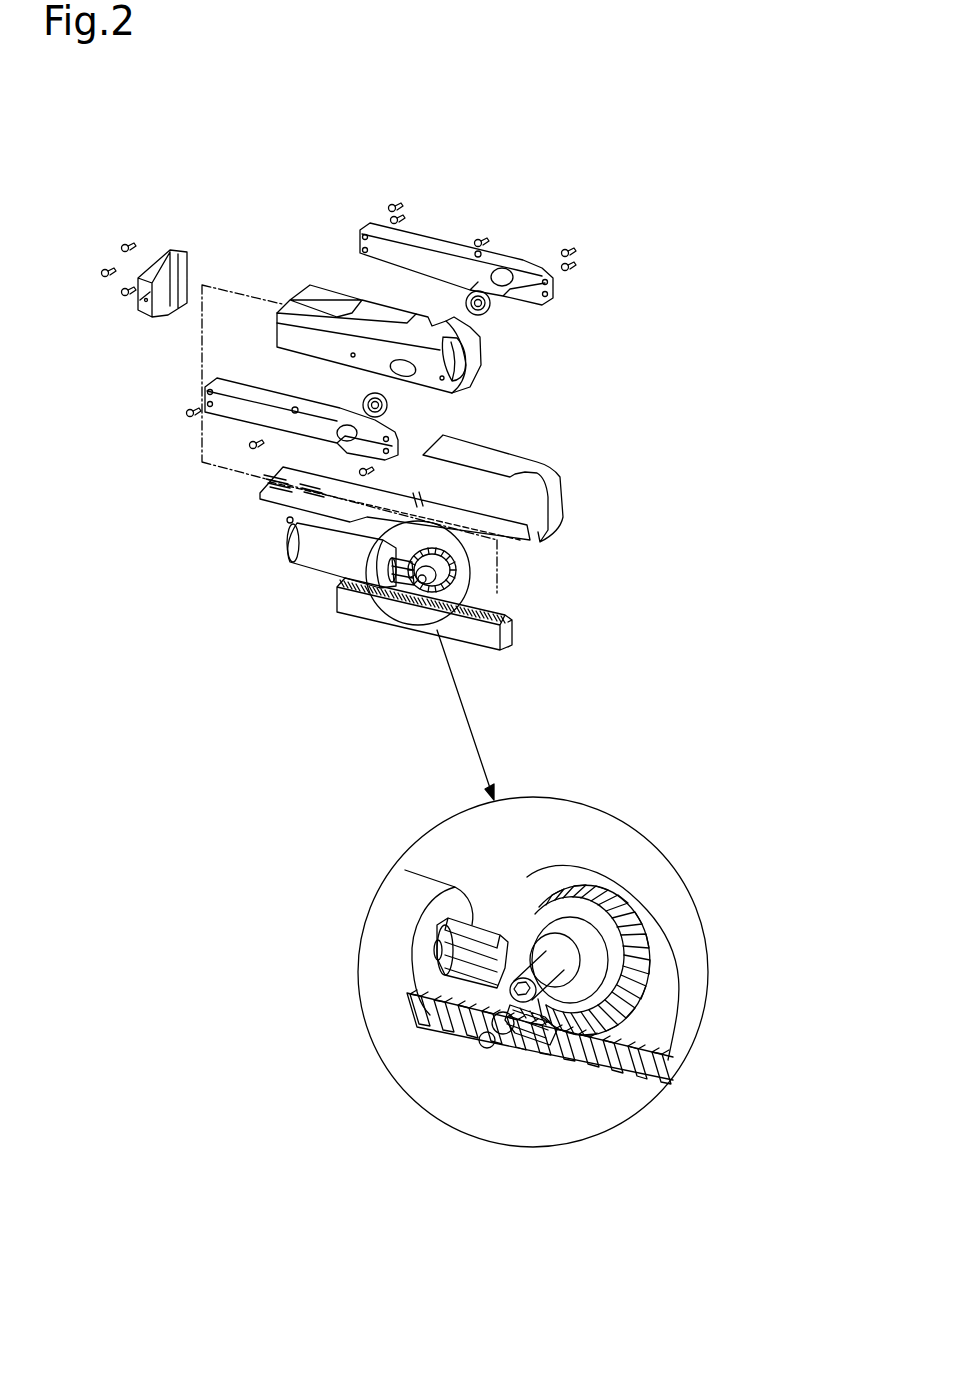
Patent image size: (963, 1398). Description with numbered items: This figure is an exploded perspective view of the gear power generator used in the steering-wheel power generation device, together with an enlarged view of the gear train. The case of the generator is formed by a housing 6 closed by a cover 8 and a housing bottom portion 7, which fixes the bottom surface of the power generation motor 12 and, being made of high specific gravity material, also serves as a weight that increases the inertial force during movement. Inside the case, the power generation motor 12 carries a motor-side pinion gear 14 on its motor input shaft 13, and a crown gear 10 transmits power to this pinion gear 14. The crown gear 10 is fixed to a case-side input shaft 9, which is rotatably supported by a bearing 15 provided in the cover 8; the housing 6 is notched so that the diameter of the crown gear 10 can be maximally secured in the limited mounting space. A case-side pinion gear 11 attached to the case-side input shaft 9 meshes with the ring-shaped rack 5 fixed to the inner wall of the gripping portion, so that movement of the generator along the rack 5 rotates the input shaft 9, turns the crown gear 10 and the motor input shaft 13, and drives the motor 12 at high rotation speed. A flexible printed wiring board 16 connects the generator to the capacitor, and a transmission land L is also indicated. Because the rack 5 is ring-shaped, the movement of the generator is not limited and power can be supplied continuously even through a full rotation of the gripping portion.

The ring-shaped rack 5 is at (457, 1020).
The housing 6 is at (338, 322).
The housing bottom portion 7 is at (158, 282).
The cover 8 is at (375, 405).
The case-side input shaft 9 is at (553, 985).
The crown gear 10 is at (650, 997).
The case-side pinion gear 11 is at (538, 1030).
The power generation motor 12 is at (313, 556).
The motor input shaft 13 is at (487, 1047).
The motor-side pinion gear 14 is at (407, 990).
The bearing 15 is at (478, 302).
The flexible printed wiring board 16 is at (482, 458).
The transmission land L is at (273, 498).